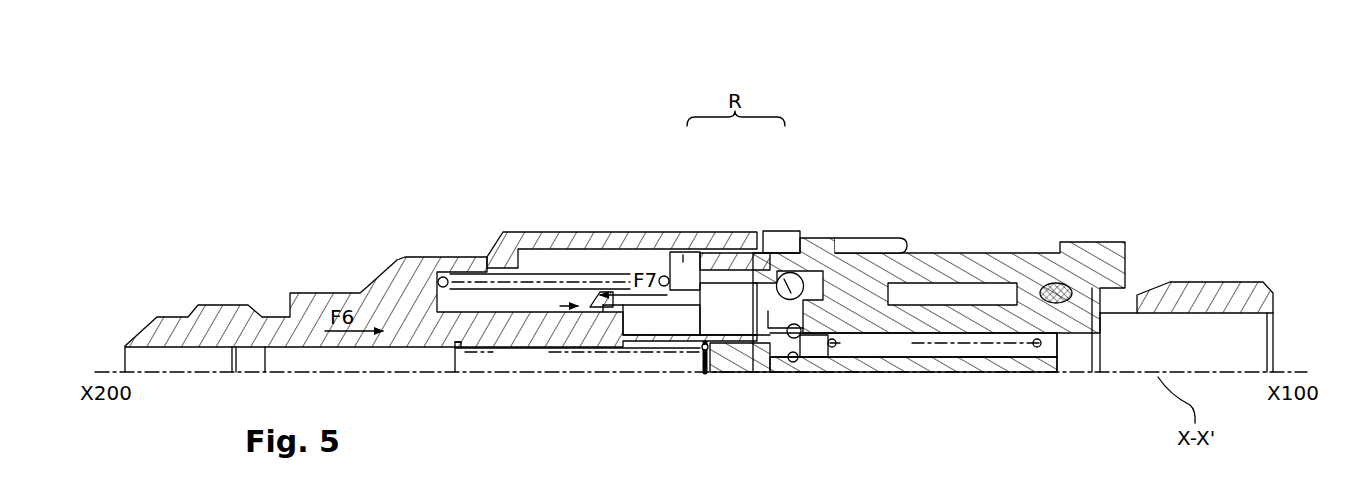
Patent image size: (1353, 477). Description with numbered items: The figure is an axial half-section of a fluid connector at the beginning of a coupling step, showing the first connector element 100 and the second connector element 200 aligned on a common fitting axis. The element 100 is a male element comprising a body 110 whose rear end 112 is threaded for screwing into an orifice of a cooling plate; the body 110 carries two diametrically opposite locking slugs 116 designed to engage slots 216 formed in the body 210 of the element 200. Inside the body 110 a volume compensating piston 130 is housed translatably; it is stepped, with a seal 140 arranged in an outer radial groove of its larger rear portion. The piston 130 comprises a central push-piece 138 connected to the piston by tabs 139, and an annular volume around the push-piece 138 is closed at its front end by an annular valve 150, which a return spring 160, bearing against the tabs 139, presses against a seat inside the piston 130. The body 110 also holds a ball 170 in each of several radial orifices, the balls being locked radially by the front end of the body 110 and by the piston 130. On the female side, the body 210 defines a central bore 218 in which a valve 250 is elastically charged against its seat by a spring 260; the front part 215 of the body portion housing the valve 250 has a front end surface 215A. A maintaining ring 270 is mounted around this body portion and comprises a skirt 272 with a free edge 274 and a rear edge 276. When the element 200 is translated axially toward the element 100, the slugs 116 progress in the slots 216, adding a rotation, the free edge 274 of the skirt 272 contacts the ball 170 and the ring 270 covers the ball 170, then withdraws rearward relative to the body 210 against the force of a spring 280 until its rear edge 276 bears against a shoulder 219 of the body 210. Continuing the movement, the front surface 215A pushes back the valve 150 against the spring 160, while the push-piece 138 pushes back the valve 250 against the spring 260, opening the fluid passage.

The first connector element 100 is at (881, 220).
The second connector element 200 is at (602, 218).
The body 110 is at (1090, 247).
The rear end 112 is at (1207, 288).
The locking slug 116 is at (840, 243).
The volume compensating piston 130 is at (923, 398).
The push-piece 138 is at (980, 363).
The tab 139 is at (1050, 355).
The seal 140 is at (1043, 280).
The valve 150 is at (828, 353).
The return spring 160 is at (953, 337).
The ball 170 is at (792, 272).
The body 210 is at (397, 285).
The front part 215 is at (732, 347).
The front end surface 215A is at (793, 373).
The slot 216 is at (768, 229).
The central bore 218 is at (577, 354).
The shoulder 219 is at (478, 350).
The valve 250 is at (703, 348).
The spring 260 is at (630, 347).
The maintaining ring 270 is at (678, 247).
The skirt 272 is at (727, 250).
The free edge 274 is at (783, 363).
The rear edge 276 is at (553, 348).
The spring 280 is at (495, 280).